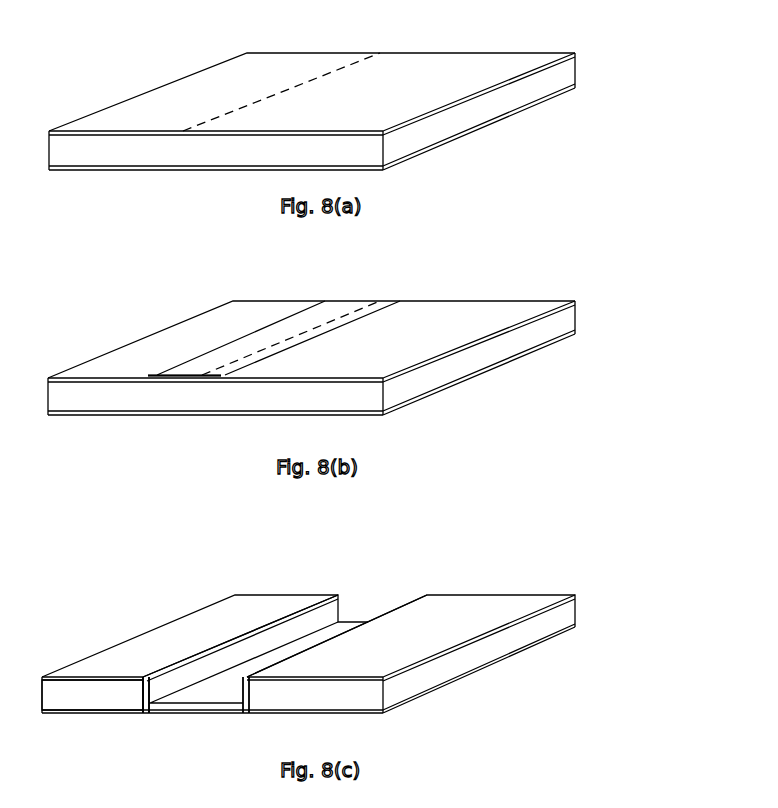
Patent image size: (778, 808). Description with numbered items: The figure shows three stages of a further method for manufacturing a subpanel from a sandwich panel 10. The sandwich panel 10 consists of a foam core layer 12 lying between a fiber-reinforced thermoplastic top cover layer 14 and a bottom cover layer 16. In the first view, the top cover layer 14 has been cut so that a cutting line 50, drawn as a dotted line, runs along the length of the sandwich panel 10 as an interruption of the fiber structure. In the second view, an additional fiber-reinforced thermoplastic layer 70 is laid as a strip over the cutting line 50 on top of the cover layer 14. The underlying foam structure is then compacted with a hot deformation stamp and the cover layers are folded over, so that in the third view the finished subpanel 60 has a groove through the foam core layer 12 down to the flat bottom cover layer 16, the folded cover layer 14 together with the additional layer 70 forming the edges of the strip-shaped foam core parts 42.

In FIG. 8A, the sandwich panel 10 is at (360, 85).
In FIG. 8B, the sandwich panel 10 is at (363, 330).
In FIG. 8A, the foam core layer 12 is at (548, 80).
In FIG. 8B, the foam core layer 12 is at (548, 327).
In FIG. 8C, the foam core layer 12 is at (65, 700).
In FIG. 8A, the top cover layer 14 is at (553, 53).
In FIG. 8B, the top cover layer 14 is at (553, 300).
In FIG. 8C, the top cover layer 14 is at (537, 610).
In FIG. 8A, the bottom cover layer 16 is at (527, 104).
In FIG. 8B, the bottom cover layer 16 is at (527, 350).
In FIG. 8C, the bottom cover layer 16 is at (530, 647).
In FIG. 8A, the cutting line 50 is at (322, 74).
In FIG. 8B, the cutting line 50 is at (322, 323).
In FIG. 8B, the additional fiber-reinforced thermoplastic layer 70 is at (297, 322).
In FIG. 8C, the additional fiber-reinforced thermoplastic layer 70 is at (303, 623).
In FIG. 8C, the subpanel 60 is at (366, 651).
In FIG. 8C, the foam core part 42 is at (105, 695).